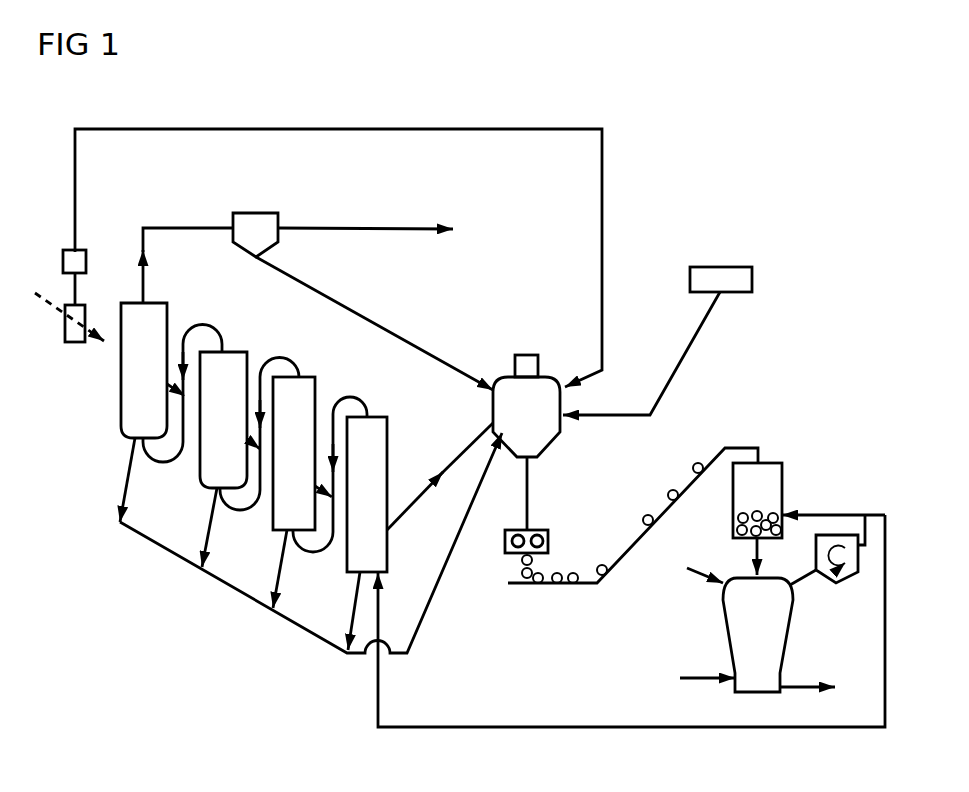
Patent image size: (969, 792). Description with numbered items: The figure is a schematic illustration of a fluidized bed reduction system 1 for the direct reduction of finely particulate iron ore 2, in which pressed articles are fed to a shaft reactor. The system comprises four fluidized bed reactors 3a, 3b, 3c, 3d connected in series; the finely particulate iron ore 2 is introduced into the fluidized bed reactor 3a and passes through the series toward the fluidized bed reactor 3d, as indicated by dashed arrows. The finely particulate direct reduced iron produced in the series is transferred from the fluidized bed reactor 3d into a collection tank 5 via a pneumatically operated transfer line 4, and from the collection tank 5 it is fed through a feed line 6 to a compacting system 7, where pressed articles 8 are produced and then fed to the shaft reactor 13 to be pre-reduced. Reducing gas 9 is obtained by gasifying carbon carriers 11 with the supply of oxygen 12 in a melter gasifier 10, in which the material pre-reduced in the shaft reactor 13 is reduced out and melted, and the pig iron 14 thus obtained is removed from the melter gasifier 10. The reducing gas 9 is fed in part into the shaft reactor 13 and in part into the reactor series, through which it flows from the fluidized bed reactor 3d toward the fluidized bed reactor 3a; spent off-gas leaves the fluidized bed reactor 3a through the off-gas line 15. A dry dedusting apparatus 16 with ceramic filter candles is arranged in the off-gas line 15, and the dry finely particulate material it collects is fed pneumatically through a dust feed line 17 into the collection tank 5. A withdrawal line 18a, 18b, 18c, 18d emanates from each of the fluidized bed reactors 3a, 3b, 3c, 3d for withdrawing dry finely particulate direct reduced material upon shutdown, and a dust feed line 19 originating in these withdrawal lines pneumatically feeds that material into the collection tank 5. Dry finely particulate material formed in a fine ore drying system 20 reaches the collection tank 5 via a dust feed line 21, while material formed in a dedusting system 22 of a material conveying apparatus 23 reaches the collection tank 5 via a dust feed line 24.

The fluidized bed reduction system 1 is at (747, 139).
The finely particulate iron ore 2 is at (44, 303).
The fluidized bed reactor 3a is at (160, 302).
The fluidized bed reactor 3b is at (235, 351).
The fluidized bed reactor 3c is at (305, 376).
The fluidized bed reactor 3d is at (378, 416).
The pneumatically operated transfer line 4 is at (464, 447).
The collection tank 5 is at (527, 354).
The feed line 6 is at (530, 492).
The compacting system 7 is at (549, 541).
The pressed articles 8 is at (521, 561).
The reducing gas 9 is at (204, 324).
The melter gasifier 10 is at (727, 635).
The carbon carriers 11 is at (690, 565).
The oxygen 12 is at (693, 677).
The shaft reactor 13 is at (770, 462).
The pig iron 14 is at (821, 684).
The off-gas line 15 is at (192, 227).
The dry dedusting apparatus 16 is at (256, 212).
The dust feed line 17 is at (396, 336).
The withdrawal line 18a is at (123, 488).
The withdrawal line 18b is at (205, 525).
The withdrawal line 18c is at (278, 562).
The withdrawal line 18d is at (353, 602).
The dust feed line 19 is at (423, 617).
The fine ore drying system 20 is at (722, 266).
The dust feed line 21 is at (692, 336).
The dedusting system 22 is at (62, 250).
The material conveying apparatus 23 is at (75, 343).
The dust feed line 24 is at (350, 128).